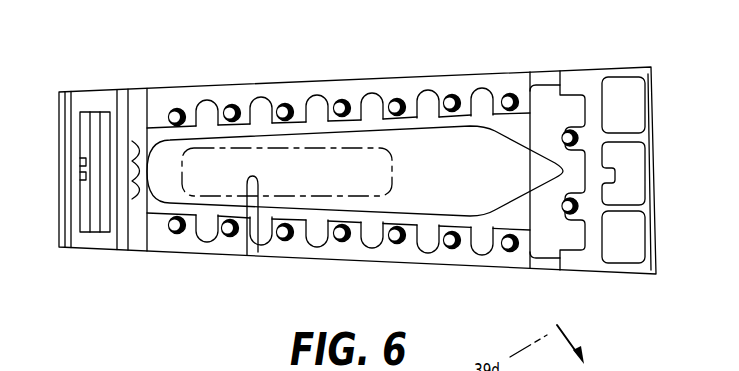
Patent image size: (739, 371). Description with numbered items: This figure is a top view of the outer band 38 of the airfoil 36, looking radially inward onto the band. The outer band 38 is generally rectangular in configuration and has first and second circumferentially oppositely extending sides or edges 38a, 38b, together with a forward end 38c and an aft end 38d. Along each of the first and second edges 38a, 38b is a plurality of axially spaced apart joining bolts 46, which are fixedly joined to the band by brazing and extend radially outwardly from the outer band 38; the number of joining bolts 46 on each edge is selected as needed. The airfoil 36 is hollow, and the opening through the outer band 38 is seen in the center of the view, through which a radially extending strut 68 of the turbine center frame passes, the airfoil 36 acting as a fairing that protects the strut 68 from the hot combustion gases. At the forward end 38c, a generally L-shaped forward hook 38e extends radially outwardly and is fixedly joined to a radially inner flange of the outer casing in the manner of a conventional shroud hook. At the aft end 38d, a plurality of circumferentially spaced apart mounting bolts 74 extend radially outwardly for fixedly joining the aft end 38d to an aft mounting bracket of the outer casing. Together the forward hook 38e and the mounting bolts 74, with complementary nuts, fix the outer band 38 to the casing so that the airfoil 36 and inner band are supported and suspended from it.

The airfoil 36 is at (164, 184).
The outer band 38 is at (200, 70).
The first edge of outer band 38a is at (382, 262).
The second edge of outer band 38b is at (327, 81).
The forward end of outer band 38c is at (100, 249).
The aft end of outer band 38d is at (613, 272).
The forward hook 38e is at (123, 91).
The joining bolts 46 is at (287, 103).
The strut 68 is at (258, 252).
The mounting bolts 74 is at (568, 207).